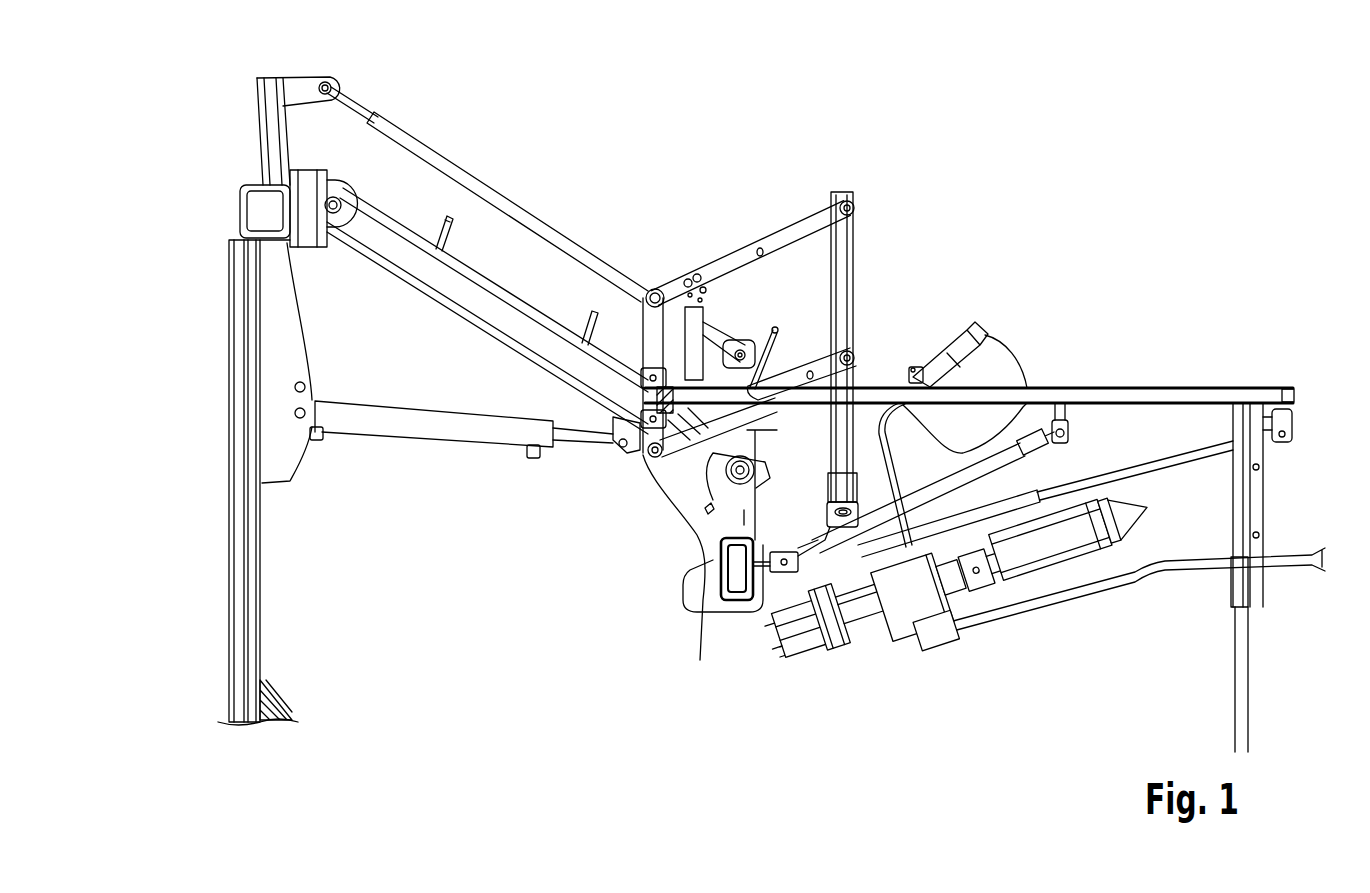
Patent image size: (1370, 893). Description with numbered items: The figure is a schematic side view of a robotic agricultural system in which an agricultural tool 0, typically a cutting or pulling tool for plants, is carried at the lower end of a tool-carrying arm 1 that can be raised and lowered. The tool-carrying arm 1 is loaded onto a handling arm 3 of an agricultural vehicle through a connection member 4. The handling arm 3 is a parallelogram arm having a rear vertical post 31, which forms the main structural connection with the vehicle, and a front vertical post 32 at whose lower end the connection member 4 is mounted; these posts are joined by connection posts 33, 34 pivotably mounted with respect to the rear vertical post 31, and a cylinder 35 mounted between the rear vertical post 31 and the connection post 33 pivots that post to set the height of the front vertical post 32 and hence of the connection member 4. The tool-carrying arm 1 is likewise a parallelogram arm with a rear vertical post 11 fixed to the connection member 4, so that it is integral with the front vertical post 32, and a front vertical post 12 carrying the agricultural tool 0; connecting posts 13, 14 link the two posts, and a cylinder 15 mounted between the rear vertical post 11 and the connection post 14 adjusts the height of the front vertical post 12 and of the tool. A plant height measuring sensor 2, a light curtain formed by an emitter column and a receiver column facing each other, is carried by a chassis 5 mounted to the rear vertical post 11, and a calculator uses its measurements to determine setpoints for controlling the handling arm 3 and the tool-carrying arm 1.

The agricultural tool 0 is at (1030, 547).
The tool-carrying arm 1 is at (749, 208).
The plant height measuring sensor 2 is at (1243, 502).
The handling arm 3 is at (550, 184).
The connection member 4 is at (703, 573).
The chassis 5 is at (1043, 392).
The rear vertical post 11 is at (646, 332).
The front vertical post 12 is at (843, 247).
The connecting post 13 is at (793, 380).
The connecting post 14 is at (793, 223).
The cylinder 15 is at (697, 313).
The rear vertical post 31 is at (277, 380).
The front vertical post 32 is at (750, 430).
The connection post 33 is at (397, 248).
The connection post 34 is at (467, 173).
The cylinder 35 is at (431, 427).